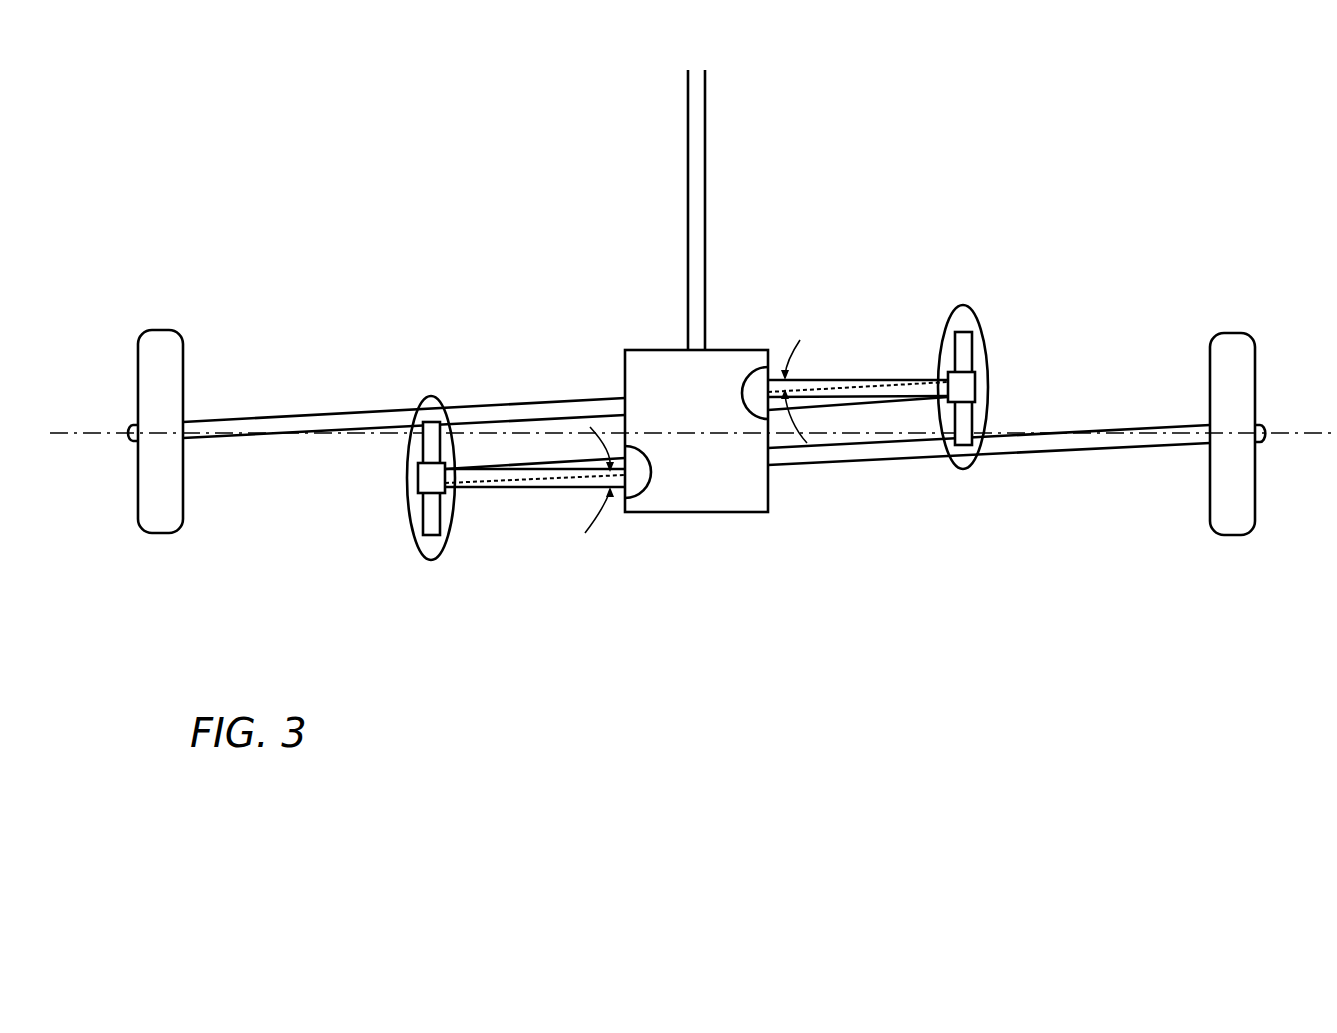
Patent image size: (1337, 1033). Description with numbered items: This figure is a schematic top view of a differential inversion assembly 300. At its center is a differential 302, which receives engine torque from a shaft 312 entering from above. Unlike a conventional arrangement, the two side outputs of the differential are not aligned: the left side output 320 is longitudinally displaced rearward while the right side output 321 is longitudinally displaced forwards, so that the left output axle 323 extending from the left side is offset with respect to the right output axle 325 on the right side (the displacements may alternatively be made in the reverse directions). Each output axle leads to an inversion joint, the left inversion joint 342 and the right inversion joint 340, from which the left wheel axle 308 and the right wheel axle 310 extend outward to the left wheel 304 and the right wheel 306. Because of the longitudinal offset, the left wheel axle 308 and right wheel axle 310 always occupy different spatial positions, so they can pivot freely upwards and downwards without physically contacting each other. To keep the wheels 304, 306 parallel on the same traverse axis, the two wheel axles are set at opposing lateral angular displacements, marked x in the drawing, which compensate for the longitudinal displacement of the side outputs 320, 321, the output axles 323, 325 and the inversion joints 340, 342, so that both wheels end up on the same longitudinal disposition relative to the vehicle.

The differential inversion assembly 300 is at (398, 161).
The differential 302 is at (648, 350).
The left wheel 304 is at (165, 330).
The right wheel 306 is at (1237, 333).
The left wheel axle 308 is at (296, 428).
The right wheel axle 310 is at (568, 459).
The shaft 312 is at (706, 160).
The left side output 320 is at (648, 512).
The right side output 321 is at (742, 373).
The left output axle 323 is at (562, 488).
The right output axle 325 is at (850, 378).
The inversion joint 340 is at (963, 305).
The inversion joint 342 is at (432, 560).